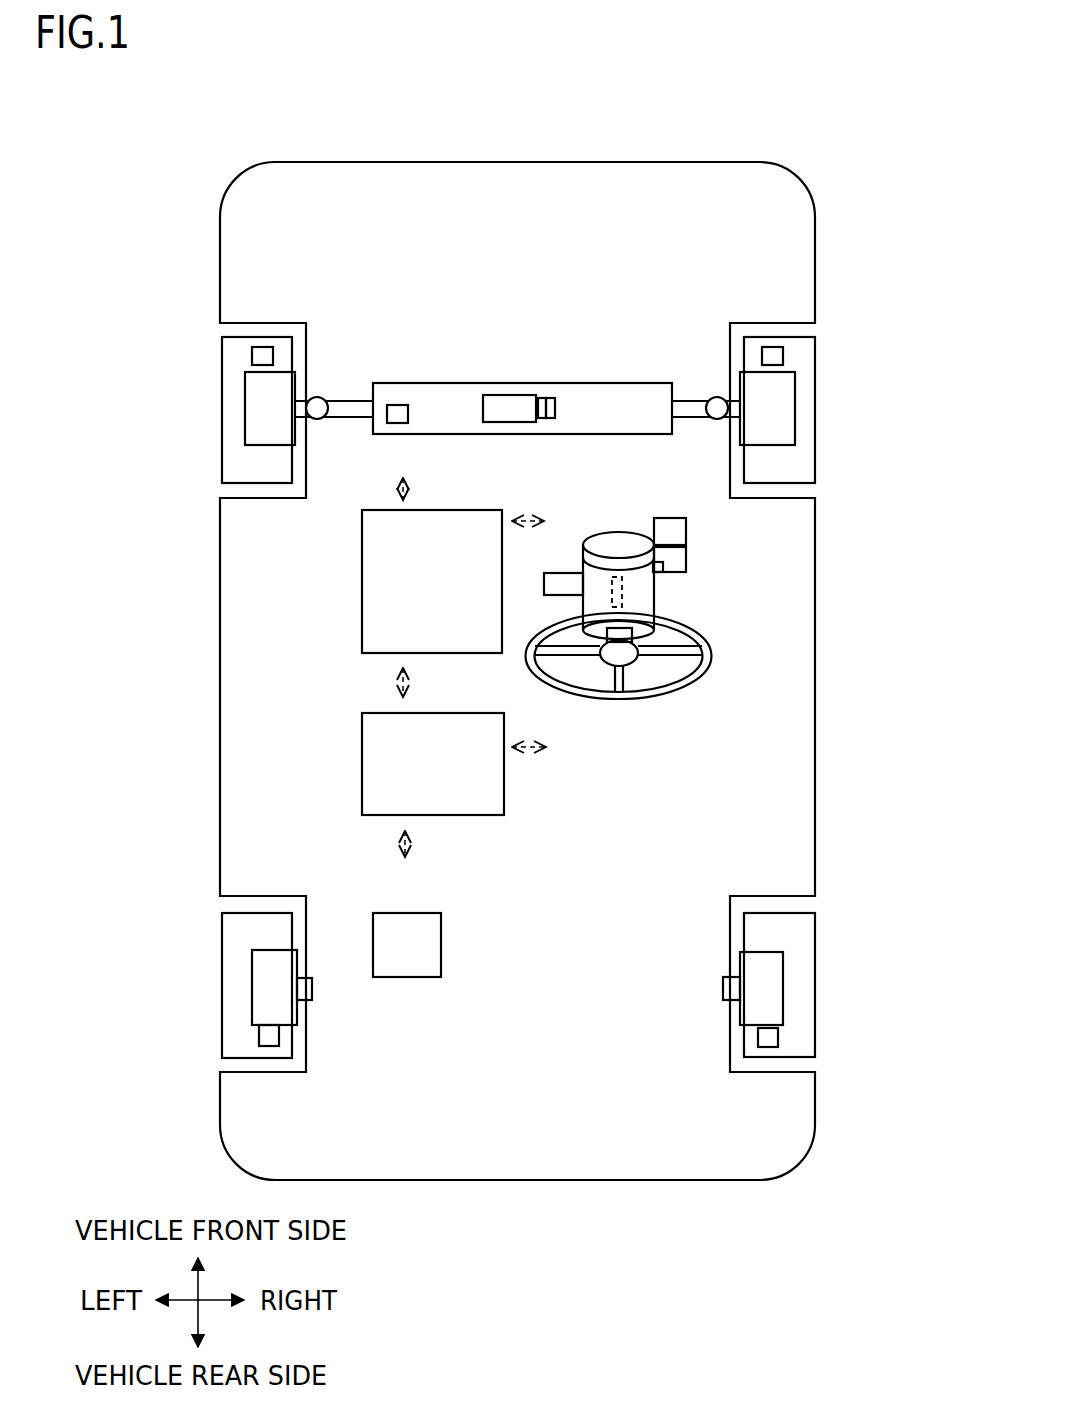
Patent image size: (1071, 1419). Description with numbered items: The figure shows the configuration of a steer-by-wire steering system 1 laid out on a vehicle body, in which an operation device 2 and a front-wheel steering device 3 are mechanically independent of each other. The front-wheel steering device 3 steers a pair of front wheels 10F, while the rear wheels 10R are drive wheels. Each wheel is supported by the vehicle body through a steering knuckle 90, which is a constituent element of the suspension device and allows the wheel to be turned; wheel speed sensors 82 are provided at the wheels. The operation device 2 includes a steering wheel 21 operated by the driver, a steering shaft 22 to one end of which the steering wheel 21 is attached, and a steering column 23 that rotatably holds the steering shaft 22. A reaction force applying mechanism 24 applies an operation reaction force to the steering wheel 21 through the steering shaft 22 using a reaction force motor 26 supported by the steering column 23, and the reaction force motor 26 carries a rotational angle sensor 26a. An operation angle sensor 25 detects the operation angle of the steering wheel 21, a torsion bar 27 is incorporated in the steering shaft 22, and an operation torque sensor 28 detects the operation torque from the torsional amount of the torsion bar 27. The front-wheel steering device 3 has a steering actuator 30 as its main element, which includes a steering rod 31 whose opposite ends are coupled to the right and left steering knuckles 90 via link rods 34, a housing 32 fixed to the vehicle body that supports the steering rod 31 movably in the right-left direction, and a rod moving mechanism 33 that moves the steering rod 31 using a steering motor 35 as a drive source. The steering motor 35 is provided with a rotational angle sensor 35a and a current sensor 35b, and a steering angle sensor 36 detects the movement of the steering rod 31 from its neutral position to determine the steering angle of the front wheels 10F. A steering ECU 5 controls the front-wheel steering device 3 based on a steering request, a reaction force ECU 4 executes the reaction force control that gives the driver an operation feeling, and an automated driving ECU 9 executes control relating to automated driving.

The steering system 1 is at (175, 132).
The operation device 2 is at (698, 612).
The front-wheel steering device 3 is at (494, 345).
The reaction force ECU 4 is at (362, 757).
The steering ECU 5 is at (380, 510).
The automated driving ECU 9 is at (441, 950).
The front wheels 10F is at (222, 408).
The rear wheels 10R is at (222, 928).
The steering wheel 21 is at (672, 691).
The steering shaft 22 is at (624, 634).
The steering column 23 is at (642, 592).
The reaction force applying mechanism 24 is at (618, 541).
The operation angle sensor 25 is at (686, 530).
The reaction force motor 26 is at (686, 562).
The rotational angle sensor 26a is at (663, 570).
The torsion bar 27 is at (612, 596).
The operation torque sensor 28 is at (576, 580).
The steering actuator 30 is at (517, 358).
The steering rod 31 is at (338, 405).
The housing 32 is at (598, 390).
The rod moving mechanism 33 is at (600, 425).
The link rods 34 is at (305, 396).
The steering motor 35 is at (506, 395).
The rotational angle sensor 35a is at (541, 398).
The current sensor 35b is at (550, 398).
The steering angle sensor 36 is at (398, 405).
The wheel speed sensors 82 is at (262, 358).
The steering knuckles 90 is at (245, 400).